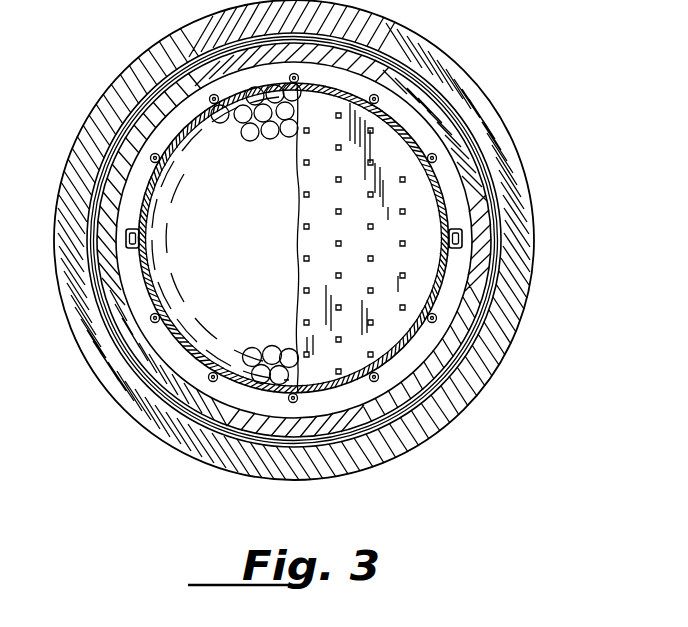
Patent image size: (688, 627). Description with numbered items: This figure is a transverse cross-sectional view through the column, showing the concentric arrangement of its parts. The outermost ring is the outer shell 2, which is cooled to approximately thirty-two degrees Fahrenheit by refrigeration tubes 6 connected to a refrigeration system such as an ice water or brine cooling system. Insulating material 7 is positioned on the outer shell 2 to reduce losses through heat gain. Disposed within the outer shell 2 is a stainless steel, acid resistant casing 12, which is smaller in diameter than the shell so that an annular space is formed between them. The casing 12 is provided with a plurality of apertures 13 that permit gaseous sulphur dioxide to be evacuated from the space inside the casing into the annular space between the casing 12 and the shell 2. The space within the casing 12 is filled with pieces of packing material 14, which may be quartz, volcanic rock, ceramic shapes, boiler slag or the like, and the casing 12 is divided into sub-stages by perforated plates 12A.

The outer shell 2 is at (448, 345).
The refrigeration tubes 6 is at (497, 227).
The insulating material 7 is at (510, 283).
The casing 12 is at (402, 347).
The perforated plates 12A is at (418, 218).
The apertures 13 is at (297, 397).
The packing material 14 is at (253, 377).